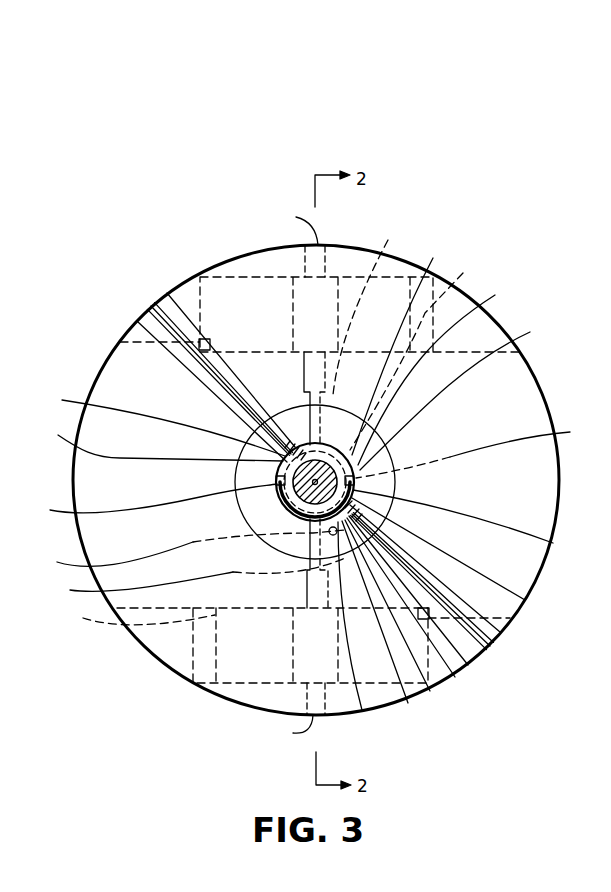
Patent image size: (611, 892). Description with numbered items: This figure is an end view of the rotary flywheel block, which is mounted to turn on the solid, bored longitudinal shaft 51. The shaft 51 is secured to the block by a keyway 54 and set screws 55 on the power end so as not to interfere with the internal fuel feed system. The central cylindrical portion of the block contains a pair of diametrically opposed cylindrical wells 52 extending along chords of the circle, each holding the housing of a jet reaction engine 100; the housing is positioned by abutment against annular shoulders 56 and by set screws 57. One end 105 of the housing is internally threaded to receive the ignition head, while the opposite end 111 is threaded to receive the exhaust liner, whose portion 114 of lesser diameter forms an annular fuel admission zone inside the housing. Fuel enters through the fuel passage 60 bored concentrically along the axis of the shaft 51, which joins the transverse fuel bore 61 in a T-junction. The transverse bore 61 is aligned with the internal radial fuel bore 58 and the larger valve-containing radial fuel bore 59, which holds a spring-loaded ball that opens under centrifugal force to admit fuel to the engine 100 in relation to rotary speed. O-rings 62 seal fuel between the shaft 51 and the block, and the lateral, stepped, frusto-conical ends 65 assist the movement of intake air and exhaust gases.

The shaft 51 is at (160, 421).
The cylindrical wells 52 is at (487, 342).
The keyway 54 is at (147, 502).
The set screws 55 is at (445, 613).
The annular shoulders 56 is at (211, 333).
The set screws 57 is at (288, 477).
The internal radial fuel bore 58 is at (236, 408).
The large radial fuel bore 59 is at (222, 412).
The fuel passage 60 is at (152, 441).
The transverse fuel bore 61 is at (439, 374).
The O-rings 62 is at (475, 451).
The frusto-conical ends 65 is at (457, 395).
The jet reaction engine 100 is at (400, 275).
The end of housing 105 is at (267, 440).
The opposite end of housing 111 is at (263, 300).
The portion of lesser diameter 114 is at (327, 292).